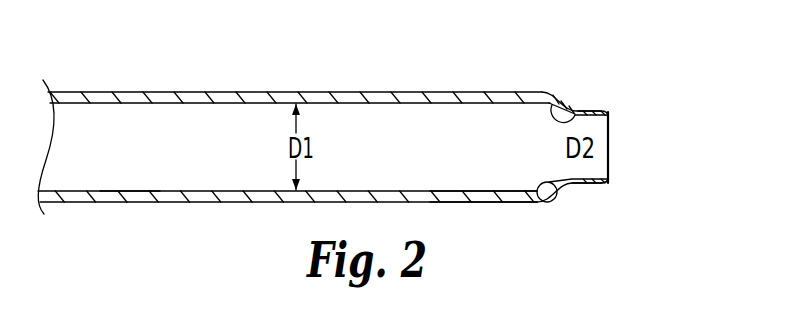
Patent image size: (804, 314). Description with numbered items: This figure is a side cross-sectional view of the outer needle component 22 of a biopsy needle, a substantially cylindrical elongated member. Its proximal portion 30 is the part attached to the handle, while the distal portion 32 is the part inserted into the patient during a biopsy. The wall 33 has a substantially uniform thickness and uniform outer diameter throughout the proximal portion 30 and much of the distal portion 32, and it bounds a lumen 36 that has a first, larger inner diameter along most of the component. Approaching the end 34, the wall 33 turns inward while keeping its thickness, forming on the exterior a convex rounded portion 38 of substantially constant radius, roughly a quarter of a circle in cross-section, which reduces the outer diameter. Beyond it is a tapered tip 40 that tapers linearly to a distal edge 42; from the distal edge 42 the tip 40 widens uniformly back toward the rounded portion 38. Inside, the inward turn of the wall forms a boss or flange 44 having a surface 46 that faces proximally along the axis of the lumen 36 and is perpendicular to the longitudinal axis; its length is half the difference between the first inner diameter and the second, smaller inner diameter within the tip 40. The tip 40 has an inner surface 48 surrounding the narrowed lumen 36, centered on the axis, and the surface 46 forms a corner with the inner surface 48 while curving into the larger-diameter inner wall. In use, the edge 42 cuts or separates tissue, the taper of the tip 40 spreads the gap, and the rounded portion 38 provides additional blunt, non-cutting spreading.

The outer needle component 22 is at (261, 88).
The proximal portion 30 is at (133, 207).
The distal portion 32 is at (511, 77).
The wall 33 is at (450, 196).
The end 34 is at (592, 190).
The lumen 36 is at (551, 145).
The rounded portion 38 is at (553, 89).
The tapered tip 40 is at (598, 104).
The distal edge 42 is at (608, 180).
The boss or flange 44 is at (546, 204).
The surface 46 is at (580, 218).
The inner surface 48 is at (608, 122).